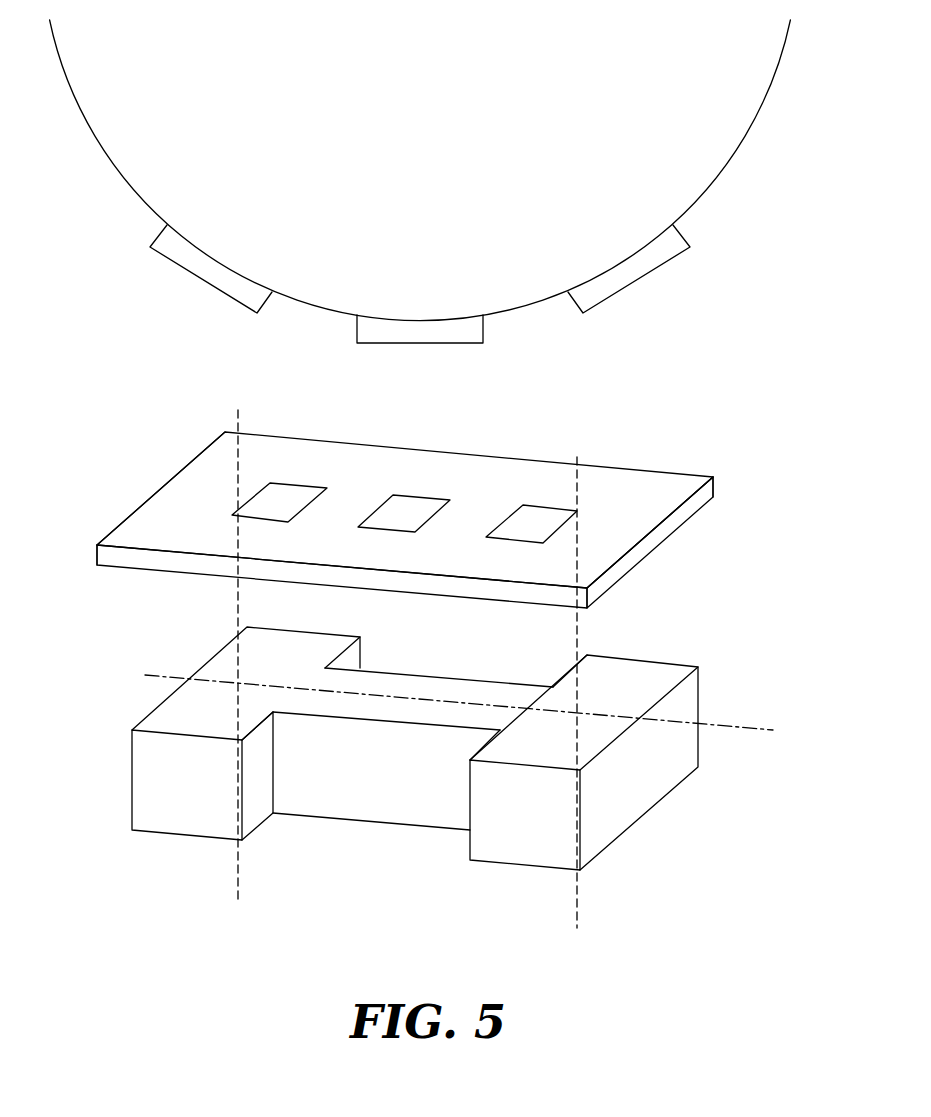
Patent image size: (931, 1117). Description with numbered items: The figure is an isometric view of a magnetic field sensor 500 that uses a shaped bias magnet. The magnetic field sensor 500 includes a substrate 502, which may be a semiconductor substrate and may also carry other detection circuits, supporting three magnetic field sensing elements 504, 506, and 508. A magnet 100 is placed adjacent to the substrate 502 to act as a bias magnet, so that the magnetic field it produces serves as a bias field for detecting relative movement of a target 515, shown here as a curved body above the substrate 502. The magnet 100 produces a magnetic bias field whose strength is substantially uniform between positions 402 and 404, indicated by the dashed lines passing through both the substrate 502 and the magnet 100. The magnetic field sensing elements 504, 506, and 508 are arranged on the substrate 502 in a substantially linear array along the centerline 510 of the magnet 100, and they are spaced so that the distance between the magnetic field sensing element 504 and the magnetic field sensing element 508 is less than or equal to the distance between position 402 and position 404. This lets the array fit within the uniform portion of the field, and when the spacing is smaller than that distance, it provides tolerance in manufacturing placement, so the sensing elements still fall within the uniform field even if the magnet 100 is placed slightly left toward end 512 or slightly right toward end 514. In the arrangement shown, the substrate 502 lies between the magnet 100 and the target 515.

The magnet 100 is at (150, 712).
The position 402 is at (238, 889).
The position 404 is at (577, 912).
The magnetic field sensor 500 is at (703, 348).
The substrate 502 is at (210, 443).
The magnetic field sensing element 504 is at (310, 487).
The magnetic field sensing element 506 is at (420, 494).
The magnetic field sensing element 508 is at (545, 507).
The centerline 510 is at (742, 727).
The end 512 is at (142, 506).
The end 514 is at (693, 478).
The target 515 is at (122, 176).